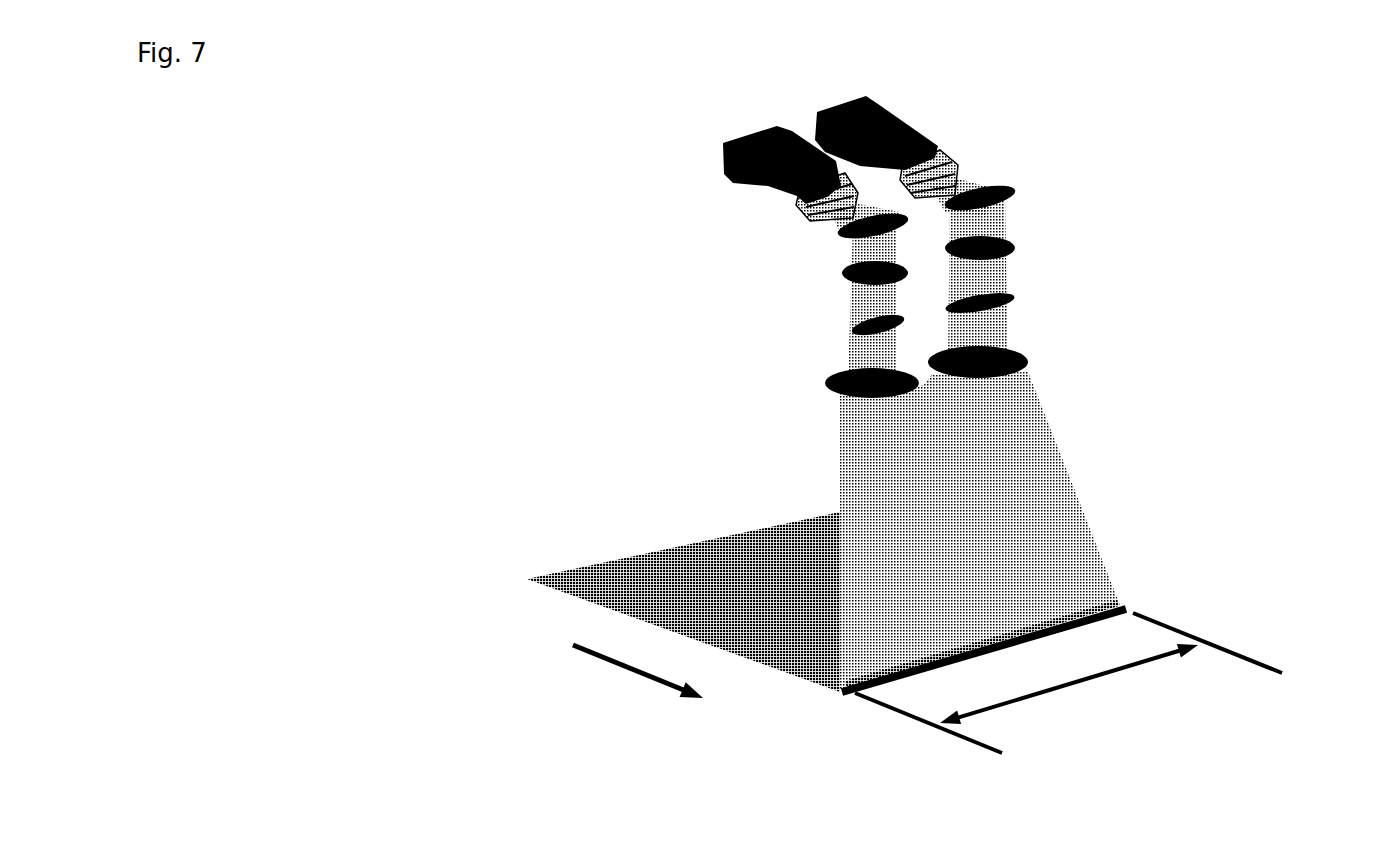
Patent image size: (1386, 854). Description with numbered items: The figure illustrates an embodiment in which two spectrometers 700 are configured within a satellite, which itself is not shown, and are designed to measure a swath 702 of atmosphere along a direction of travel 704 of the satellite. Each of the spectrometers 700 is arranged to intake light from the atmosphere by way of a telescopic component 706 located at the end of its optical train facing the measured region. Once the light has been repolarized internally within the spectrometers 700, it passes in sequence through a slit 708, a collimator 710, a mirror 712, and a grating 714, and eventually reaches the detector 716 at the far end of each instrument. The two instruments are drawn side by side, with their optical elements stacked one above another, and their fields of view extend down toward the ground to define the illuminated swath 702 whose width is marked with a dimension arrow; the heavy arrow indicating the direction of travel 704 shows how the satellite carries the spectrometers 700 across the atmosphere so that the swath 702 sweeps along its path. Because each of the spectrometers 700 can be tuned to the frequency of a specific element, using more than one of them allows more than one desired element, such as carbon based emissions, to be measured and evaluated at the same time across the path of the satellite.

The spectrometer 700 is at (320, 177).
The swath 702 is at (1083, 683).
The direction of travel 704 is at (628, 670).
The telescopic component 706 is at (1003, 360).
The slit 708 is at (862, 325).
The collimator 710 is at (985, 245).
The mirror 712 is at (973, 195).
The grating 714 is at (802, 208).
The detector 716 is at (725, 155).